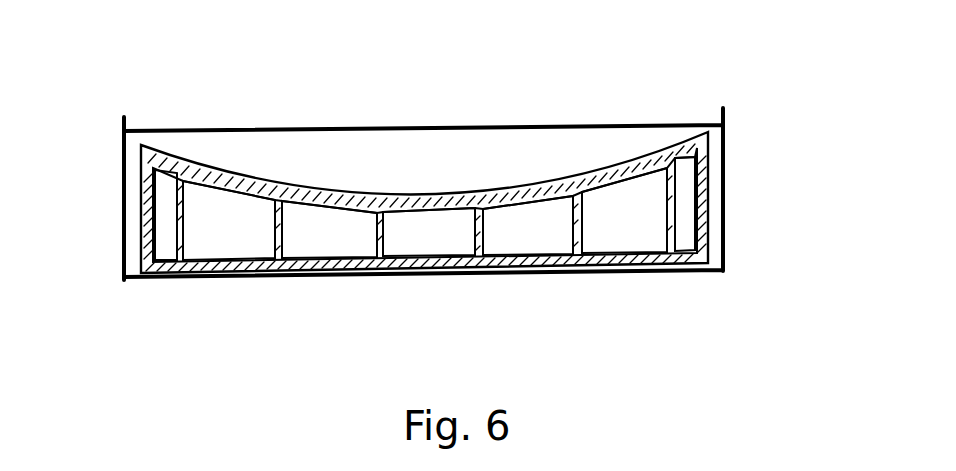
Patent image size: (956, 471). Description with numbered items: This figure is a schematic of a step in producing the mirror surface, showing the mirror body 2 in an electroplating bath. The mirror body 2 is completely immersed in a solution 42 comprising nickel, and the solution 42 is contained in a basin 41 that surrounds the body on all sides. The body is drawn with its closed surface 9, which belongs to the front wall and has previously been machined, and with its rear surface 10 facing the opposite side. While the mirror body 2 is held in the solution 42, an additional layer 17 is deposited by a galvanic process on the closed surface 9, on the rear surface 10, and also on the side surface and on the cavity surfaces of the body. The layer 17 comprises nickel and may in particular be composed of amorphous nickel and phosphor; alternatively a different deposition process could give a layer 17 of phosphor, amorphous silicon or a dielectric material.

The mirror body 2 is at (291, 196).
The closed surface 9 is at (401, 98).
The rear surface 10 is at (420, 277).
The additional layer 17 is at (145, 185).
The basin 41 is at (700, 147).
The solution 42 is at (89, 215).